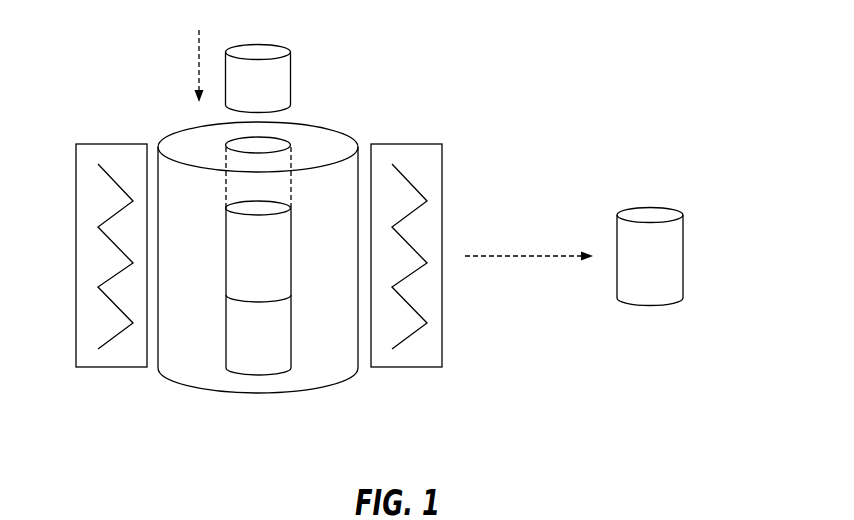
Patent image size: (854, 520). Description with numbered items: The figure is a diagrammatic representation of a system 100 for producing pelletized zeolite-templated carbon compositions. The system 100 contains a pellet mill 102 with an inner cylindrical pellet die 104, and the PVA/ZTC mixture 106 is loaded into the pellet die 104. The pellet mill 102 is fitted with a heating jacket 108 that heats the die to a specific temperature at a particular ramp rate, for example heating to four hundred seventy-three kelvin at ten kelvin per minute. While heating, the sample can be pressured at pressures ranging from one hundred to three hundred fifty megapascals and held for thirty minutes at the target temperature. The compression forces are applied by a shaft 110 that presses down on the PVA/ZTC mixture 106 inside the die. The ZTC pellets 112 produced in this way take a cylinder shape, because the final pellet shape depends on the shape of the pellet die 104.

The system 100 is at (600, 55).
The pellet mill 102 is at (328, 388).
The pellet die 104 is at (260, 373).
The PVA/ZTC mixture 106 is at (226, 250).
The heating jacket 108 is at (425, 168).
The shaft 110 is at (258, 50).
The ZTC pellets 112 is at (650, 214).